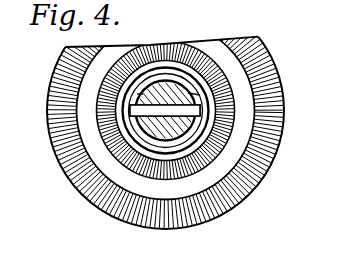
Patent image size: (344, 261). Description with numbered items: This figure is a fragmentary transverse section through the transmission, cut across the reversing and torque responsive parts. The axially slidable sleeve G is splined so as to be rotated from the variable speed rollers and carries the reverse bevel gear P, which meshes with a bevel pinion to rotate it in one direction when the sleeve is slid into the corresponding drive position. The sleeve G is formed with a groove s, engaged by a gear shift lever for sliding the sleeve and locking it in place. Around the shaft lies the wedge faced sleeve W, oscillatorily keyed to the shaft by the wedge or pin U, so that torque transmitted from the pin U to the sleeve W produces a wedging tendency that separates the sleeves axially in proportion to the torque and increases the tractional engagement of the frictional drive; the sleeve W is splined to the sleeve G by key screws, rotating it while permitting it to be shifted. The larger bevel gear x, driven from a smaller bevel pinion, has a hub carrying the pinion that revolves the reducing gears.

The wedge faced sleeve W is at (145, 108).
The axially slidable sleeve G is at (129, 110).
The reverse bevel gear P is at (112, 137).
The groove s is at (174, 118).
The wedge pin U is at (186, 121).
The larger bevel gear x is at (263, 169).